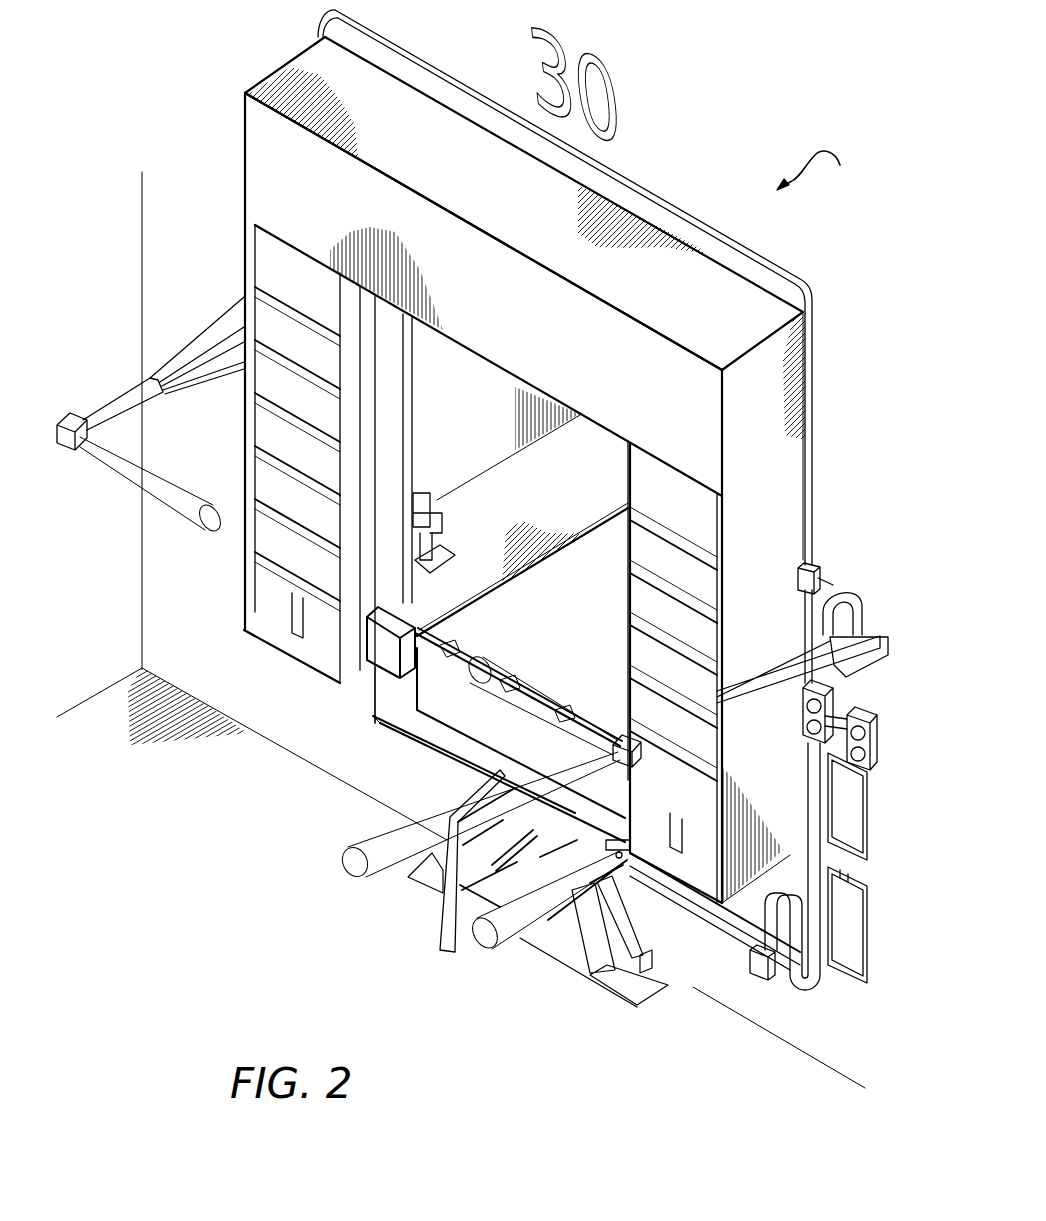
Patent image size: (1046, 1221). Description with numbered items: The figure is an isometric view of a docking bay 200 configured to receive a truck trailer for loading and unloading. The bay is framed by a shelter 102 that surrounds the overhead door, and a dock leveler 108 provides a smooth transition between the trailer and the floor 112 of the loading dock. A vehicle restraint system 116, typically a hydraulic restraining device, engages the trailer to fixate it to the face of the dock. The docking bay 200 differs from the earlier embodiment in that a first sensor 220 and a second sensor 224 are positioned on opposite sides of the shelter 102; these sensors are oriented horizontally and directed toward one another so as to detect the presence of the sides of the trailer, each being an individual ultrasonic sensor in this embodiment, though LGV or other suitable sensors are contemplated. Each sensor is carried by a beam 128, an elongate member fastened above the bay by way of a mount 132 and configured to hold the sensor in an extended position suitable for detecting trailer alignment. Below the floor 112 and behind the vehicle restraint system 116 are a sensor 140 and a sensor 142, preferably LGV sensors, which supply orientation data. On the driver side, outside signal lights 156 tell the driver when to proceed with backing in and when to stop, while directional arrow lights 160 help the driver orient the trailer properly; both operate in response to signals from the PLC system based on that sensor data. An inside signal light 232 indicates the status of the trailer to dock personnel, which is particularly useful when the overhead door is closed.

The shelter 102 is at (245, 128).
The docking bay 200 is at (829, 163).
The beam 128 is at (133, 390).
The second sensor 224 is at (70, 442).
The inside signal light 232 is at (423, 510).
The floor 112 is at (457, 630).
The dock leveler 108 is at (437, 670).
The first sensor 220 is at (620, 763).
The sensor 142 is at (493, 783).
The sensor 140 is at (619, 853).
The vehicle restraint system 116 is at (460, 922).
The mount 132 is at (875, 632).
The outside signal lights 156 is at (833, 697).
The directional arrow lights 160 is at (883, 750).